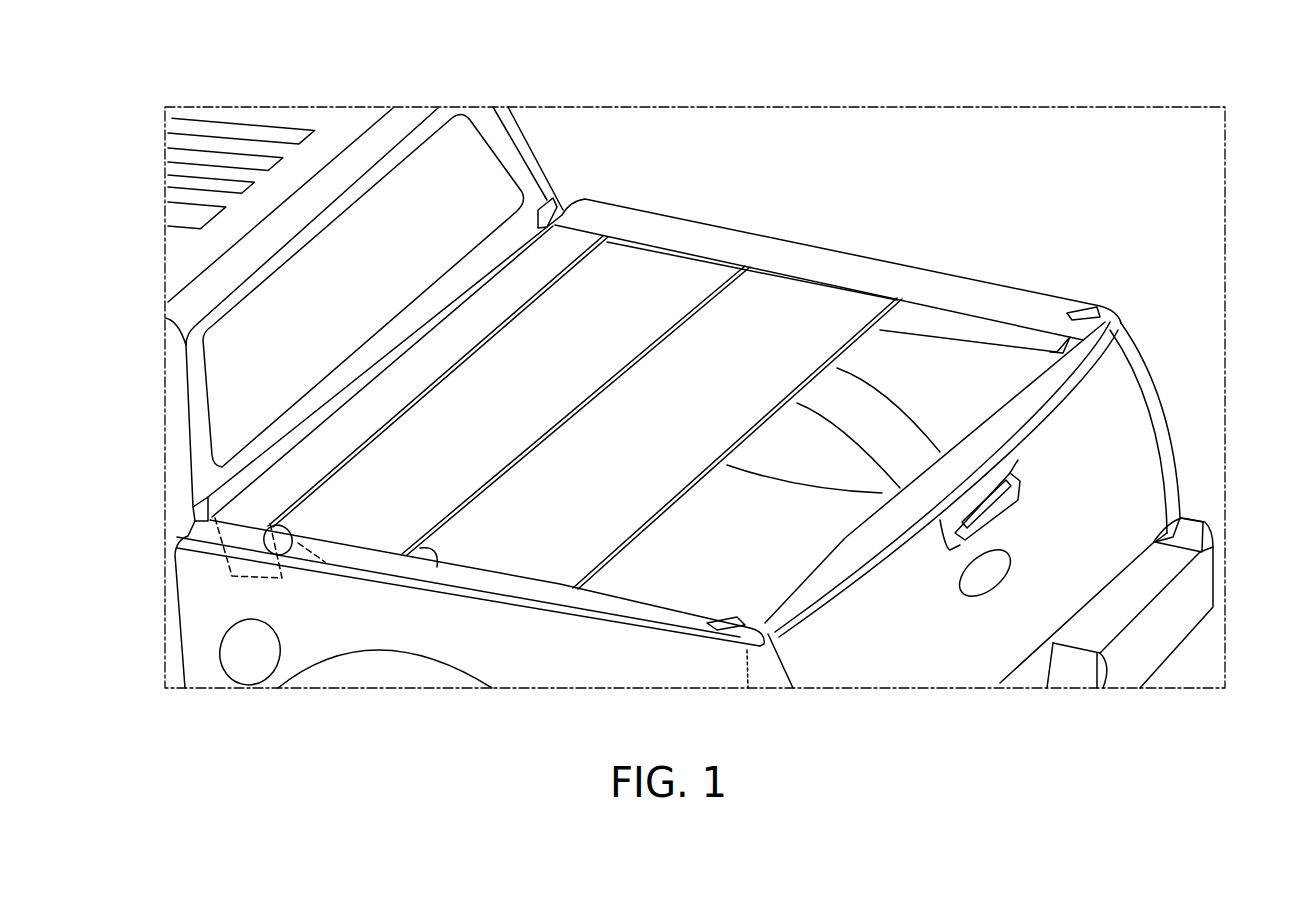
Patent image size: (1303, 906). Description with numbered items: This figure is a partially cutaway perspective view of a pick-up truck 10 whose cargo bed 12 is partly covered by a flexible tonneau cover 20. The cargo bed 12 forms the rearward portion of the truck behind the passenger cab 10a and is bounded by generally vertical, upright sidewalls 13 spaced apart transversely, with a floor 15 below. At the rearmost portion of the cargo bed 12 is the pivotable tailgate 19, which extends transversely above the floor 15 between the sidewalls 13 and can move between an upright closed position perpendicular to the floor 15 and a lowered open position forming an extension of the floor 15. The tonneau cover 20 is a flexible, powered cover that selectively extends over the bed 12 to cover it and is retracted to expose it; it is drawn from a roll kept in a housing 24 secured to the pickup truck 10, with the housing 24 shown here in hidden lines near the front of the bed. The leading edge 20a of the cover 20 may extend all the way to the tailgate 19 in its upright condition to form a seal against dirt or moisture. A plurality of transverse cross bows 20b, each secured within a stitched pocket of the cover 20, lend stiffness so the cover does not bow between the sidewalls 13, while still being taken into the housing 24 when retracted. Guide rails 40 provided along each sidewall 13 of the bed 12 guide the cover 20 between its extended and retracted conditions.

The pick-up truck 10 is at (445, 90).
The passenger cab 10a is at (508, 142).
The cargo bed 12 is at (895, 365).
The sidewalls 13 is at (990, 390).
The floor 15 is at (753, 559).
The tailgate 19 is at (1143, 425).
The tonneau cover 20 is at (688, 422).
The leading edge 20a is at (763, 432).
The cross bows 20b is at (300, 530).
The housing 24 is at (230, 580).
The guide rails 40 is at (530, 592).